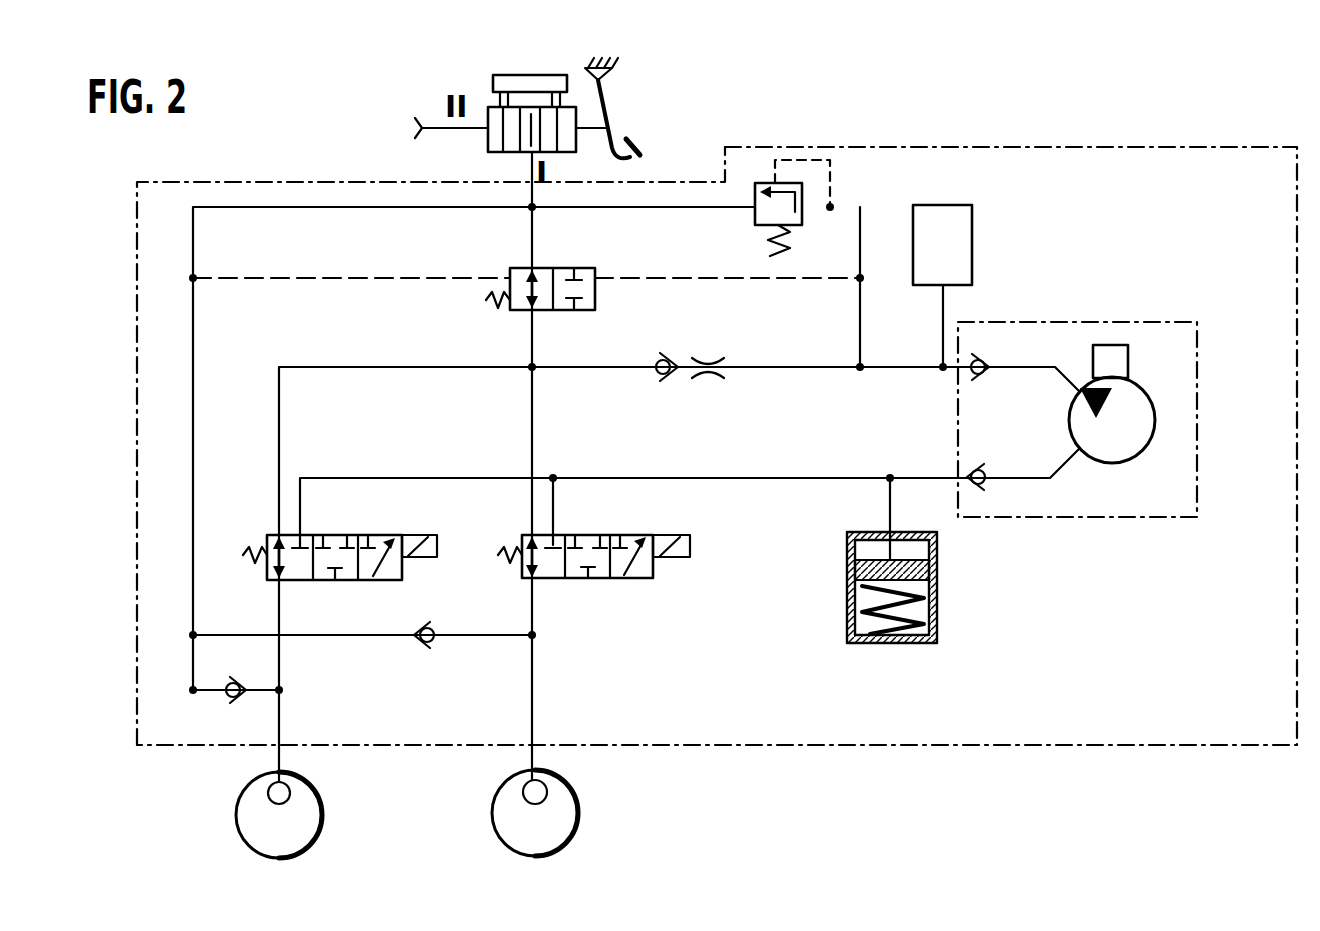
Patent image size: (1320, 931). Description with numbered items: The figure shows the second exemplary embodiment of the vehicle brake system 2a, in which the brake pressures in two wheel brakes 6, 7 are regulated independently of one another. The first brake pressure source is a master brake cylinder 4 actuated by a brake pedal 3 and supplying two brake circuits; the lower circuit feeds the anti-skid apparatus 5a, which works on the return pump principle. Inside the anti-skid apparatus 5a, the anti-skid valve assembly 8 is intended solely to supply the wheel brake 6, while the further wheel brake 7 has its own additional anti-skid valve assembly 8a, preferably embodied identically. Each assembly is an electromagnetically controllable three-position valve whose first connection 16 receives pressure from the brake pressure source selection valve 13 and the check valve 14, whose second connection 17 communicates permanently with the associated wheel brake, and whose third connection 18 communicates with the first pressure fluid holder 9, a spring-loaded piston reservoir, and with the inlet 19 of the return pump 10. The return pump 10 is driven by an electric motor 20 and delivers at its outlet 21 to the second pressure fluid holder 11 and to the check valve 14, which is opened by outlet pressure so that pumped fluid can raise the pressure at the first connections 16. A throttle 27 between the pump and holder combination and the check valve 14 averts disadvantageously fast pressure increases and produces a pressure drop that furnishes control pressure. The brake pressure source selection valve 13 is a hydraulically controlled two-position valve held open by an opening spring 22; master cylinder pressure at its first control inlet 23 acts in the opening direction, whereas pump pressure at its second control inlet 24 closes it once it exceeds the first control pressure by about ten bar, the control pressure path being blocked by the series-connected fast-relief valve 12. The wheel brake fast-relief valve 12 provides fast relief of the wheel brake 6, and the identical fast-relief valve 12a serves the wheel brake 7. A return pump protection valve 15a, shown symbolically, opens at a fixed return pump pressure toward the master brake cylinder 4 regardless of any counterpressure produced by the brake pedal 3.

The vehicle brake system 2a is at (1158, 135).
The brake pedal 3 is at (631, 148).
The master brake cylinder 4 is at (490, 140).
The anti-skid apparatus 5a is at (146, 364).
The wheel brake 6 is at (285, 793).
The wheel brake 7 is at (541, 792).
The anti-skid valve assembly 8 is at (322, 588).
The anti-skid valve assembly 8a is at (587, 559).
The first pressure fluid holder 9 is at (962, 542).
The return pump 10 is at (1077, 387).
The second pressure fluid holder 11 is at (972, 232).
The wheel brake fast-relief valve 12 is at (232, 698).
The wheel brake fast-relief valve 12a is at (431, 641).
The brake pressure source selection valve 13 is at (552, 292).
The check valve 14 is at (660, 376).
The return pump protection valve 15a is at (755, 214).
The first connection 16 is at (277, 537).
The second connection 17 is at (528, 580).
The third connection 18 is at (556, 545).
The inlet 19 is at (966, 478).
The electric motor 20 is at (1118, 356).
The outlet 21 is at (950, 374).
The opening spring 22 is at (488, 300).
The first control inlet 23 is at (510, 270).
The second control inlet 24 is at (596, 270).
The throttle 27 is at (738, 334).